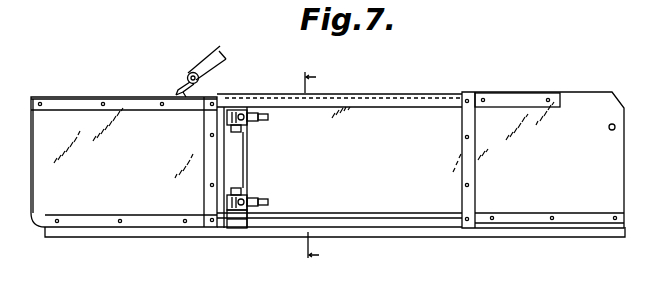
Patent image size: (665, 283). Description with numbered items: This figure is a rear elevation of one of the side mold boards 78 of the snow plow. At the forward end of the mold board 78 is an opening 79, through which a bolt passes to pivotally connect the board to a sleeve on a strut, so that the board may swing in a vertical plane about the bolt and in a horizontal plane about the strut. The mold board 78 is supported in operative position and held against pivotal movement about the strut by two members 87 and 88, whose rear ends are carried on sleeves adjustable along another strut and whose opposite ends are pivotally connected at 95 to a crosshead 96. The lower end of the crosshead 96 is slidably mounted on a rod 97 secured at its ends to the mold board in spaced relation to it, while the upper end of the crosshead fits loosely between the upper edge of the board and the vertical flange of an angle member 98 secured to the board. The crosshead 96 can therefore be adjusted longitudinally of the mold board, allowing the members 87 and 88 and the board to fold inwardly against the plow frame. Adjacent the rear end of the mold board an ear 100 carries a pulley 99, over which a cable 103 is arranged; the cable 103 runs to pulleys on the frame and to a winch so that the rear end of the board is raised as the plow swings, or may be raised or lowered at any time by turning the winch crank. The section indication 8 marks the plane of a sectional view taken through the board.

The section line 8- 8 is at (309, 165).
The side mold board 78 is at (566, 113).
The opening 79 is at (616, 127).
The member 87 is at (268, 118).
The member 88 is at (268, 203).
The pivotal connection 95 is at (243, 127).
The crosshead 96 is at (248, 165).
The rod 97 is at (362, 218).
The angle member 98 is at (496, 101).
The pulley 99 is at (189, 73).
The ear 100 is at (176, 92).
The cable 103 is at (228, 63).